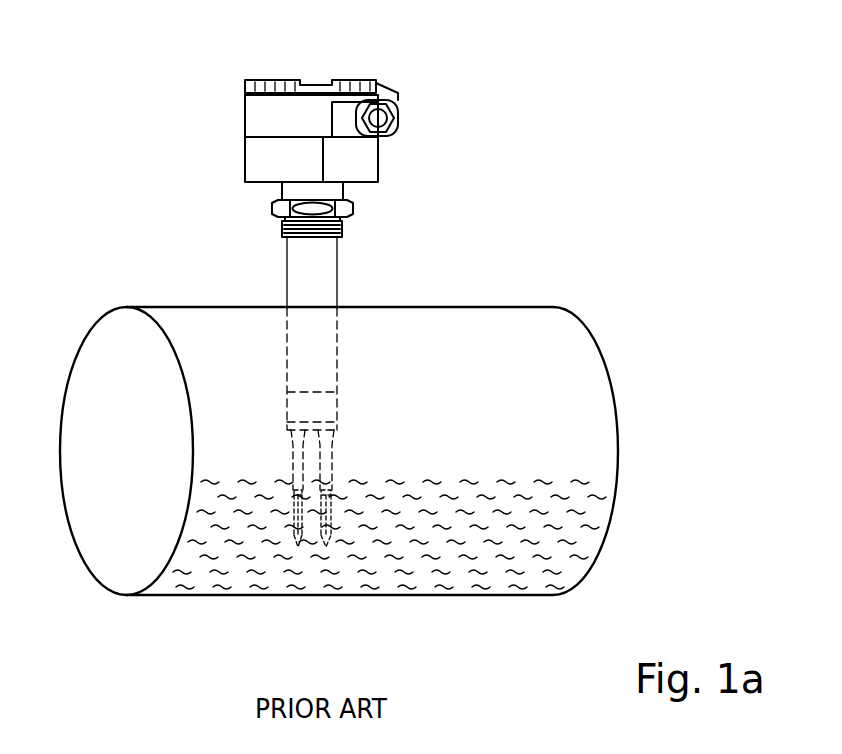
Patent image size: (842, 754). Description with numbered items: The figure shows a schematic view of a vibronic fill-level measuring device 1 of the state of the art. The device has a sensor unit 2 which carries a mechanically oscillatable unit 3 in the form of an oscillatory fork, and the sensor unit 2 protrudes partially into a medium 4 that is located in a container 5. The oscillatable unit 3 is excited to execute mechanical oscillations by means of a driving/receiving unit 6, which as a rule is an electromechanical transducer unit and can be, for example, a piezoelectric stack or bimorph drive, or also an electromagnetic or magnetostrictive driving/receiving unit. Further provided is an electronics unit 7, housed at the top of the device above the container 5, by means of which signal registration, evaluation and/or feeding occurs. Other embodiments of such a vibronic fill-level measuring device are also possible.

The vibronic fill-level measuring device 1 is at (191, 80).
The sensor unit 2 is at (372, 450).
The mechanically oscillatable unit 3 is at (360, 492).
The medium 4 is at (463, 552).
The container 5 is at (580, 587).
The driving/receiving unit 6 is at (322, 408).
The electronics unit 7 is at (365, 162).